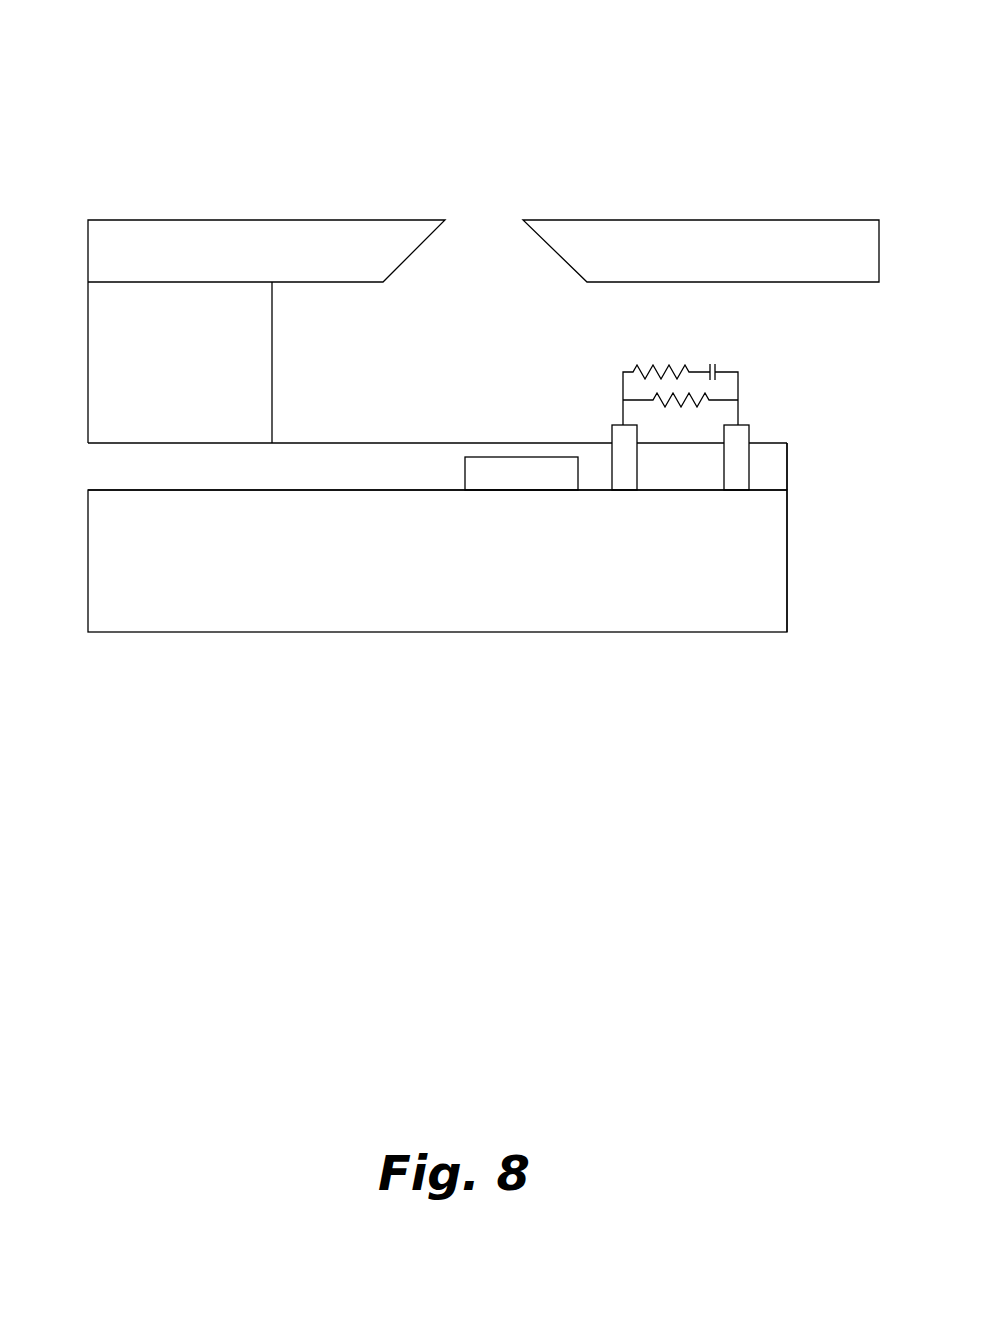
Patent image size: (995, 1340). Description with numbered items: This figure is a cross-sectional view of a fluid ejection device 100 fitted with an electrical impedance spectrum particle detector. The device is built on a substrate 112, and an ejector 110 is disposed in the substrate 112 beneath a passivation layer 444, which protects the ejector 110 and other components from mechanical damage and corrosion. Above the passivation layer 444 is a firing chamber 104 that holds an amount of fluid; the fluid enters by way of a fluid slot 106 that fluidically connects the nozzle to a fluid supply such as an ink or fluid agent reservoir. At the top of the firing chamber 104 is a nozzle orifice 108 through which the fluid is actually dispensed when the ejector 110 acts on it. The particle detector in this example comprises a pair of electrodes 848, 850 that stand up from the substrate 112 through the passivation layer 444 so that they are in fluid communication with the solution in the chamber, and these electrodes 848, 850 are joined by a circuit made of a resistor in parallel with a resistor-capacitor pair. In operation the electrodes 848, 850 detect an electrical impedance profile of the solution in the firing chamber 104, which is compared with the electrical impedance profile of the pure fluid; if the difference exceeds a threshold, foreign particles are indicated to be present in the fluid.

The fluid ejection device 100 is at (196, 78).
The firing chamber 104 is at (354, 362).
The nozzle orifice 108 is at (487, 258).
The fluid slot 106 is at (815, 568).
The passivation layer 444 is at (118, 472).
The substrate 112 is at (138, 600).
The ejector 110 is at (513, 473).
The first electrode 848 is at (618, 472).
The second electrode 850 is at (735, 472).